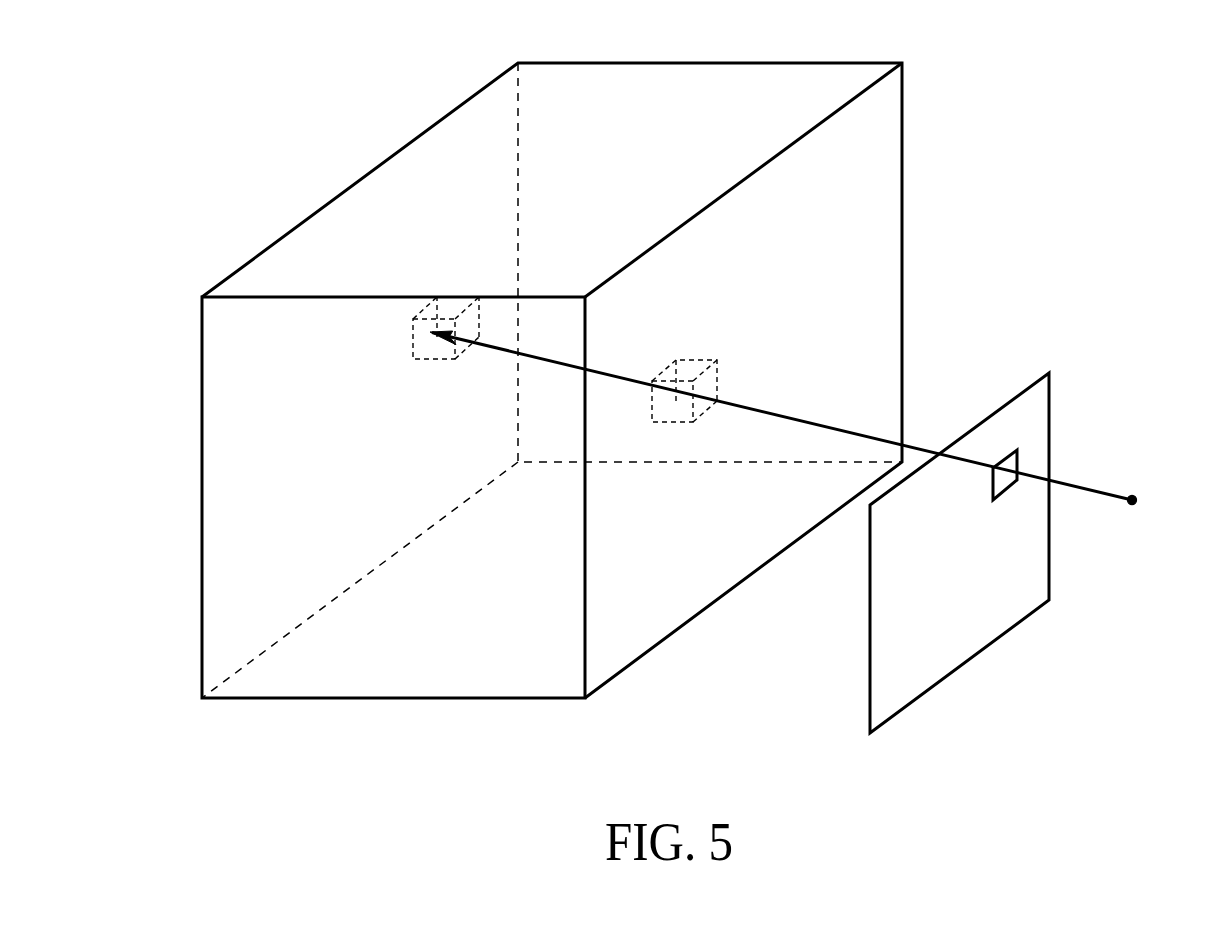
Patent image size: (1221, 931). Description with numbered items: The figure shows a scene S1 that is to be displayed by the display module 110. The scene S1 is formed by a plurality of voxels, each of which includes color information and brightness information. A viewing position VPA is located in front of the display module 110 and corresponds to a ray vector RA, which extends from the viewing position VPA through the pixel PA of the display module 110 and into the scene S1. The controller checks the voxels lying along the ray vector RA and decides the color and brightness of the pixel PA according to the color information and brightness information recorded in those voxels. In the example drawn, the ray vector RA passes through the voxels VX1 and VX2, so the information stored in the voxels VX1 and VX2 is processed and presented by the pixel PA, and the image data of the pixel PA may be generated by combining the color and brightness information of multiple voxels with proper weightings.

The scene S1 is at (873, 62).
The voxel VX1 is at (700, 360).
The voxel VX2 is at (428, 362).
The display module 110 is at (1050, 408).
The pixel PA is at (1018, 466).
The viewing position VPA is at (1164, 500).
The ray vector RA is at (1083, 493).